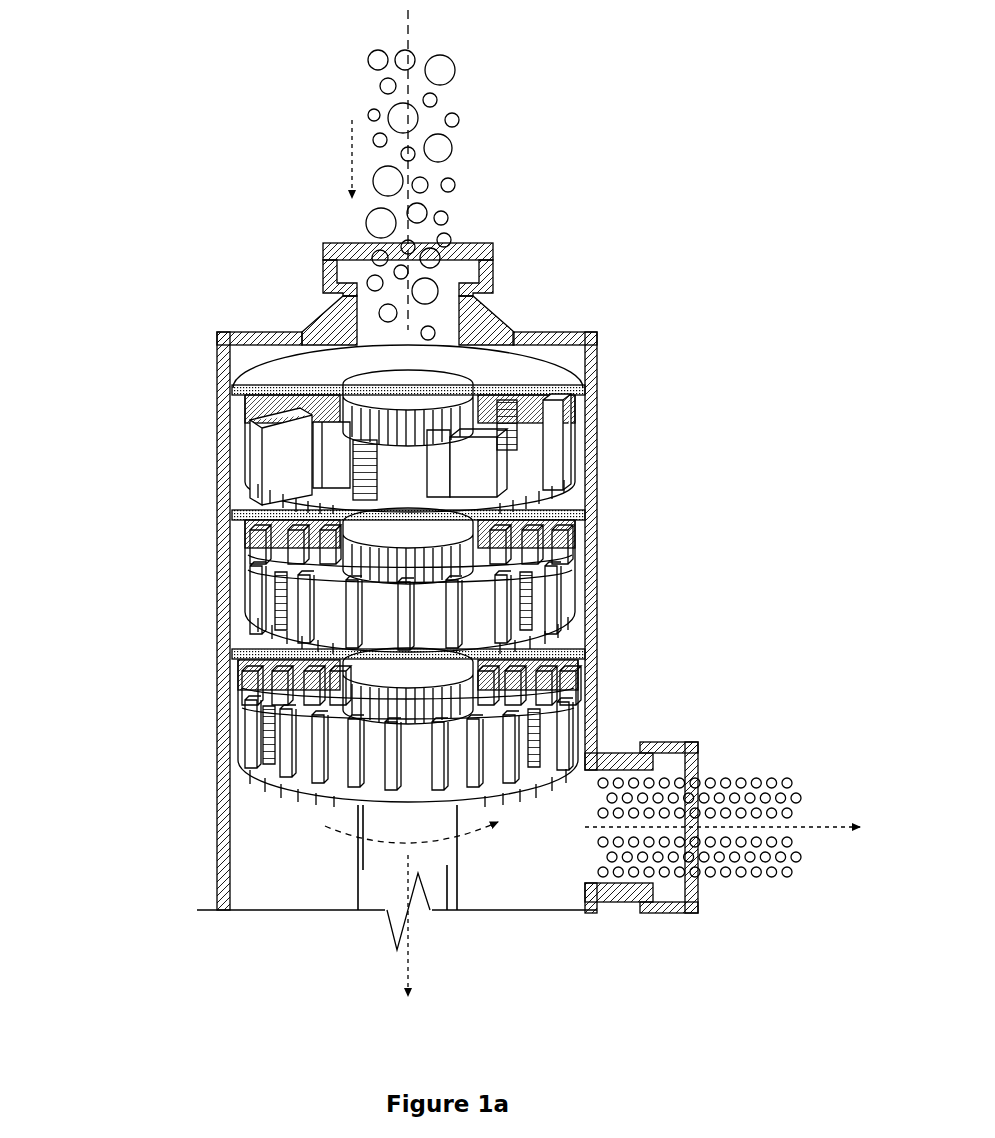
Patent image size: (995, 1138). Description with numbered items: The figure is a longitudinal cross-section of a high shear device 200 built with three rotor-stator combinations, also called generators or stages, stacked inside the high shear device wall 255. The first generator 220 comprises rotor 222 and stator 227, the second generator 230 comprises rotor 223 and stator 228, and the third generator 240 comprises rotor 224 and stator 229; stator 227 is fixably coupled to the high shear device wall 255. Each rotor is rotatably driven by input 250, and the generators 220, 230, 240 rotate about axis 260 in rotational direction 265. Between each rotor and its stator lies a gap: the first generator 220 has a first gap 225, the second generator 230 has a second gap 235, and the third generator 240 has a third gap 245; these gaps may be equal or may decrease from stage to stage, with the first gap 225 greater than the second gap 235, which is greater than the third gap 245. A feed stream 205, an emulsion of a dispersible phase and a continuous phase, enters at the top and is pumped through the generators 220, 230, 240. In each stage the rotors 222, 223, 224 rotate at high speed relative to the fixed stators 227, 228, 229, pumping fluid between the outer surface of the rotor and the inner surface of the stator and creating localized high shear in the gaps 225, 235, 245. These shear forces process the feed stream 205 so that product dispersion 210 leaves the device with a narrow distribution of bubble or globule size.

The high shear device 200 is at (153, 196).
The feed stream 205 is at (455, 230).
The product dispersion 210 is at (812, 842).
The first generator 220 is at (213, 390).
The rotor 222 is at (576, 432).
The rotor 223 is at (576, 565).
The rotor 224 is at (576, 702).
The first gap 225 is at (480, 455).
The stator 227 is at (566, 376).
The stator 228 is at (566, 500).
The stator 229 is at (566, 632).
The second generator 230 is at (213, 520).
The second gap 235 is at (485, 586).
The third generator 240 is at (213, 652).
The third gap 245 is at (490, 712).
The input 250 is at (366, 892).
The high shear device wall 255 is at (218, 338).
The axis 260 is at (400, 965).
The rotational direction 265 is at (468, 845).